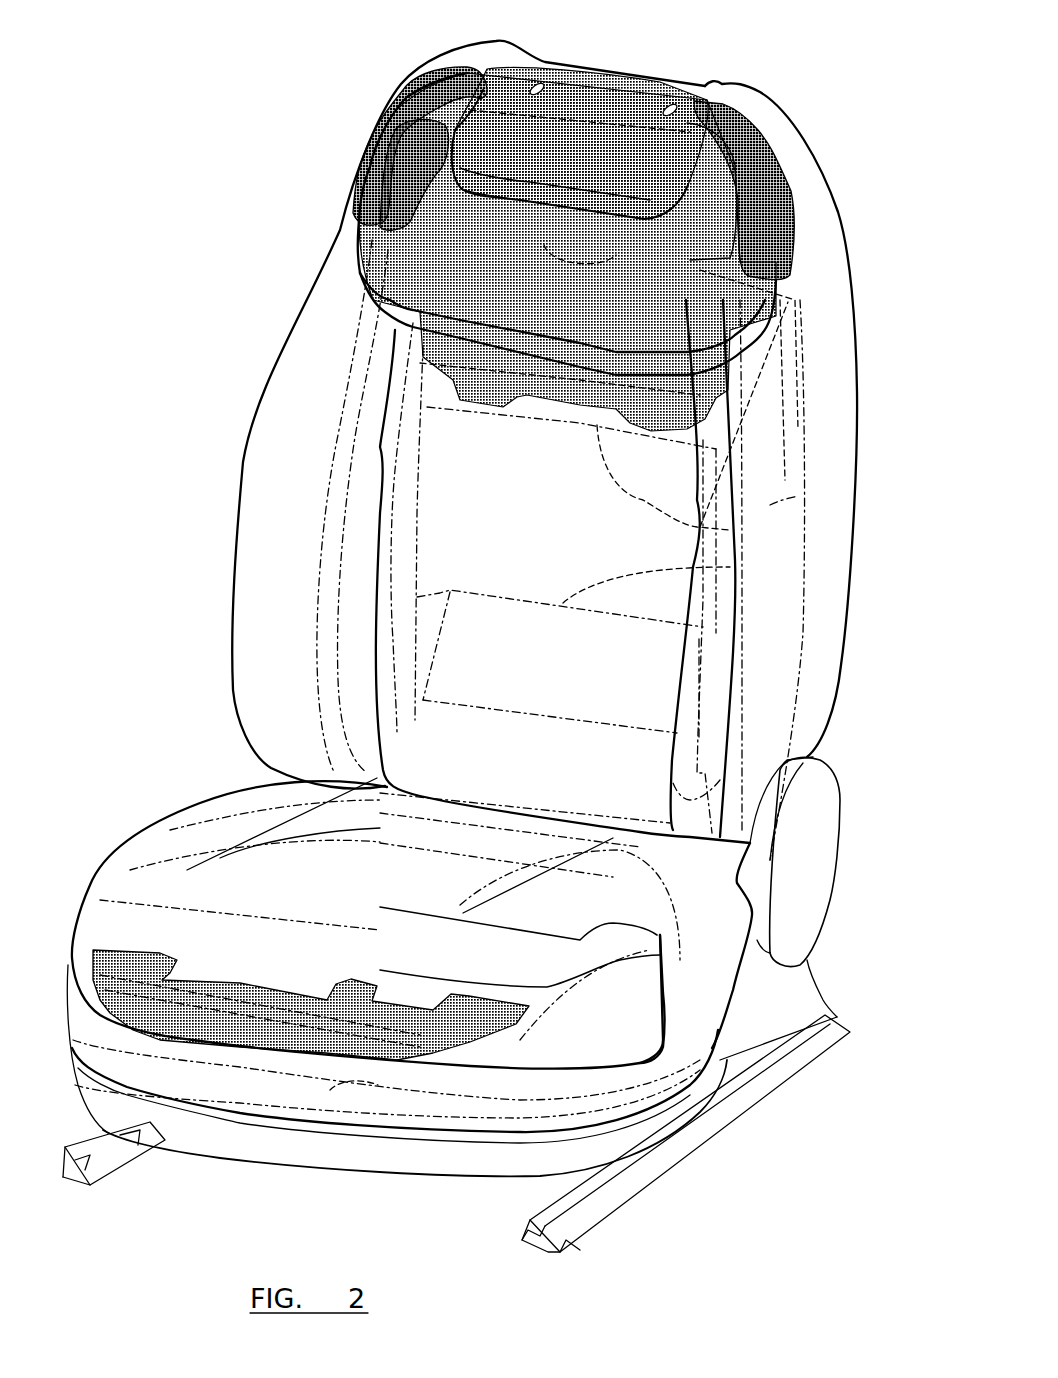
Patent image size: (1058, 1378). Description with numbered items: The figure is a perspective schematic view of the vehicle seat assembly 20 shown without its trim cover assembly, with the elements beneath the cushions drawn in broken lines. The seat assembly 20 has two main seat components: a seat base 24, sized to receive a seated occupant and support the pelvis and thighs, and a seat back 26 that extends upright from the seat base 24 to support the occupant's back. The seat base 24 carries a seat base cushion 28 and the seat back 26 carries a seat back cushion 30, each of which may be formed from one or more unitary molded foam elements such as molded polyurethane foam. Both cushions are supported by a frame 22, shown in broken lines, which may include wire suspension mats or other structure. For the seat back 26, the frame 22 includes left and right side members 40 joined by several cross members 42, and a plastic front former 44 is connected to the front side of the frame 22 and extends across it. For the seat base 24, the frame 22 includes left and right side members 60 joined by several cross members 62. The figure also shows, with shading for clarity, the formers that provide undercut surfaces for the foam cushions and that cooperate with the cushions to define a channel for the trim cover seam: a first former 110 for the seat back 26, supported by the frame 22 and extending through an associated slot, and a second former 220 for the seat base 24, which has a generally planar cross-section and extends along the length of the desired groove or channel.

The seat assembly 20 is at (186, 60).
The seat base 24 is at (86, 830).
The seat back 26 is at (212, 252).
The seat base cushion 28 is at (190, 800).
The seat back cushion 30 is at (243, 462).
The frame 22 is at (344, 441).
The side members 40 is at (762, 509).
The cross members 42 is at (788, 302).
The front former 44 is at (705, 388).
The side members 60 is at (683, 952).
The cross members 62 is at (378, 1060).
The first former 110 is at (393, 128).
The second former 220 is at (258, 1035).